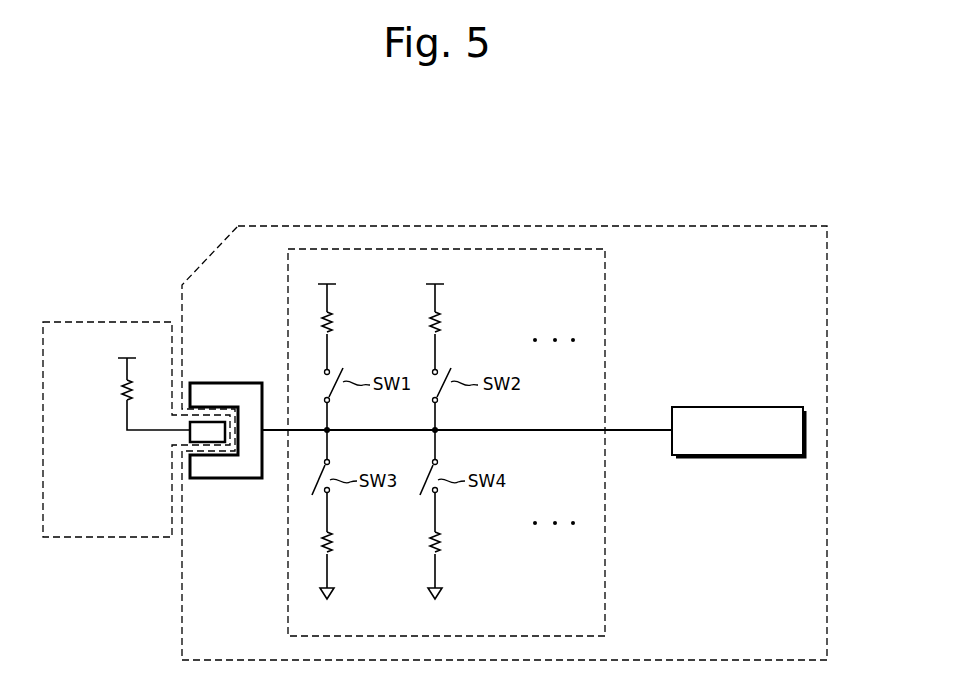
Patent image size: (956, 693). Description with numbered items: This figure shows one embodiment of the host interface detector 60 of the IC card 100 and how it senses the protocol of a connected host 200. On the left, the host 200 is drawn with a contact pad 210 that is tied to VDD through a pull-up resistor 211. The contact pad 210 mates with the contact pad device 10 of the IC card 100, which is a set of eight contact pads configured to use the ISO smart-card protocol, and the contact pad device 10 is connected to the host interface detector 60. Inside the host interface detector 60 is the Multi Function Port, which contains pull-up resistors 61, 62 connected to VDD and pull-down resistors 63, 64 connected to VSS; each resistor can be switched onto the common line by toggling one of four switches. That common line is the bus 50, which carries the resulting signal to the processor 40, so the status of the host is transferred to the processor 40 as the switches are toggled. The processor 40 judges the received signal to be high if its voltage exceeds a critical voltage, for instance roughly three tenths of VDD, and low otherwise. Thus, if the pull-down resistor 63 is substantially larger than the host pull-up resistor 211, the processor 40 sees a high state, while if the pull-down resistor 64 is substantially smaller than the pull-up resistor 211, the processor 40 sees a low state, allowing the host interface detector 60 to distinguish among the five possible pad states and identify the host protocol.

The IC card 100 is at (747, 226).
The host 200 is at (110, 322).
The pull-up resistor 211 is at (118, 390).
The contact pads 210 is at (190, 437).
The contact pad device 10 is at (222, 383).
The bus 50 is at (635, 429).
The host interface detector 60 is at (605, 292).
The pull-up resistor 61 is at (335, 320).
The pull-up resistor 62 is at (443, 320).
The pull-down resistor 63 is at (335, 540).
The pull-down resistor 64 is at (443, 540).
The processor 40 is at (768, 407).